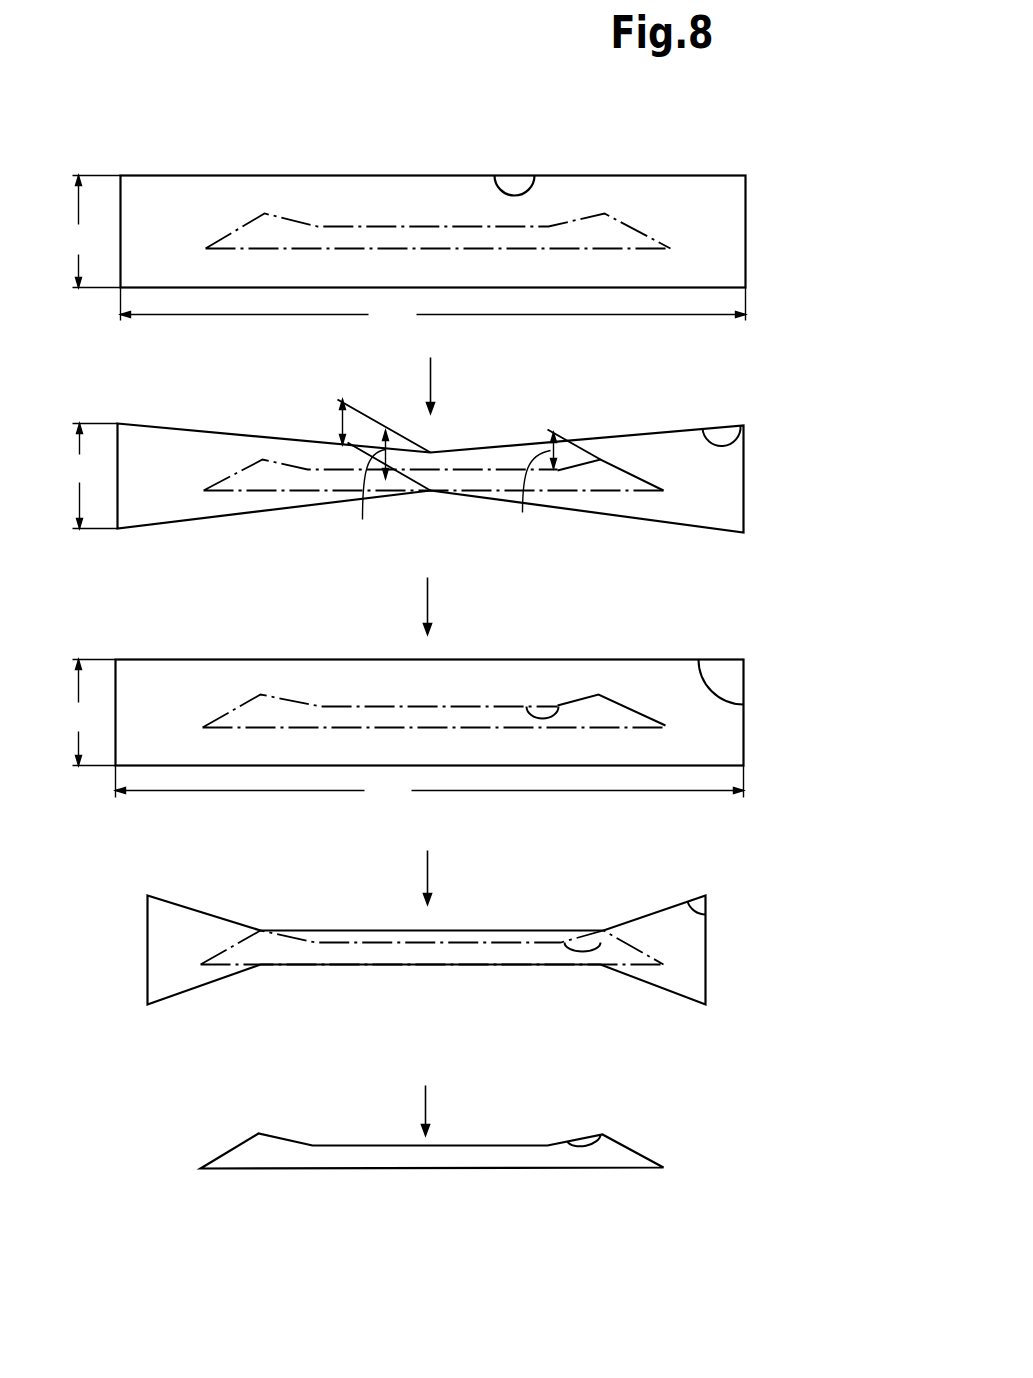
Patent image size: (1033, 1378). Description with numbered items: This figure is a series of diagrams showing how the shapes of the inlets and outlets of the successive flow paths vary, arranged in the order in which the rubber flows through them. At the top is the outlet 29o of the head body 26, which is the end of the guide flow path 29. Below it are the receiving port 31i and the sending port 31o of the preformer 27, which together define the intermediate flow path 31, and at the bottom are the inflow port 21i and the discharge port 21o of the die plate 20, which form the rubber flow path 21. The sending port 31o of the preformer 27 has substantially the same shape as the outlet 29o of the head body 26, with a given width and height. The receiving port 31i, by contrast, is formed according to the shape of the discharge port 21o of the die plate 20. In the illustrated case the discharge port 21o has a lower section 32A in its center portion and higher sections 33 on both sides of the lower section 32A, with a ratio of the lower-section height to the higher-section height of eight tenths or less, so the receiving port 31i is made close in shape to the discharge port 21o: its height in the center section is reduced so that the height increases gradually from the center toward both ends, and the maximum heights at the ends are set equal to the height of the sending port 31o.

The guide flow path 29 is at (669, 162).
The head body 26 is at (424, 225).
The outlet 29o is at (536, 173).
The intermediate flow path 31 is at (750, 517).
The preformer 27 is at (431, 603).
The receiving port 31i is at (745, 423).
The sending port 31o is at (743, 697).
The lower section 32A is at (436, 455).
The higher sections 33 is at (602, 444).
The rubber flow path 21 is at (710, 985).
The die plate 20 is at (471, 1032).
The inflow port 21i is at (632, 470).
The discharge port 21o is at (598, 932).